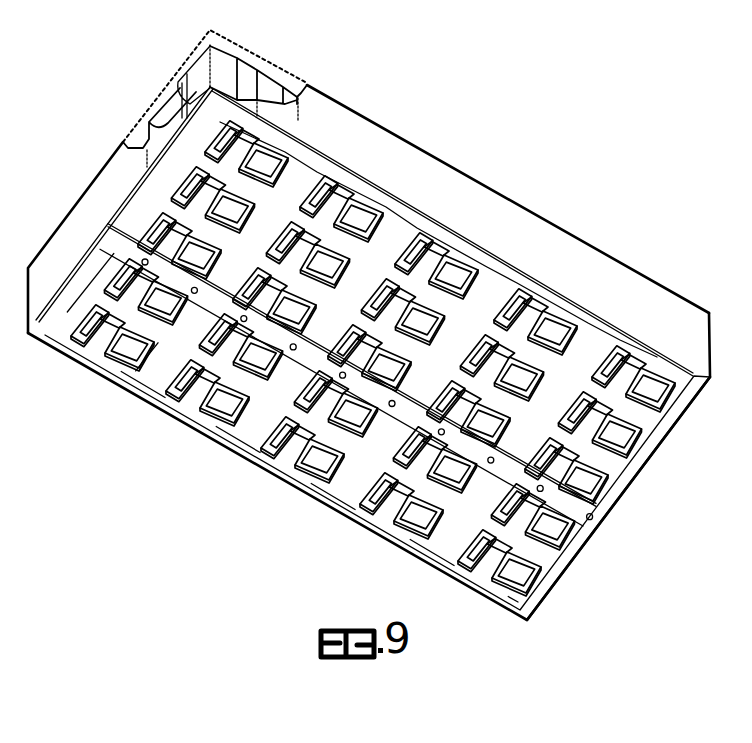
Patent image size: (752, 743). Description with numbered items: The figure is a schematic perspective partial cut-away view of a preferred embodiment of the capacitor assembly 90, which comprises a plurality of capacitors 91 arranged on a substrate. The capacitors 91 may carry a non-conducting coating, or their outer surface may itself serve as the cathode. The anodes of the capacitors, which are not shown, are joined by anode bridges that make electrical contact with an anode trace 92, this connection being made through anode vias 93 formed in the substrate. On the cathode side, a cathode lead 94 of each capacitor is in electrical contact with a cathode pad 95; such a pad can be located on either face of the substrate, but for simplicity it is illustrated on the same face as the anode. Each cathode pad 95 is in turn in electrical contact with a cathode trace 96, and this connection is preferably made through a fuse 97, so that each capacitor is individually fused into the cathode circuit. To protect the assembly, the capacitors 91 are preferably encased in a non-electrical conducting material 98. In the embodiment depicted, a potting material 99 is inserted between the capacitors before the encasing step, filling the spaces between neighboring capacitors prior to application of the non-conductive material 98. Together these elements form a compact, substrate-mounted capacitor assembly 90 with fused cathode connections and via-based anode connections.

The capacitor assembly 90 is at (601, 627).
The capacitors 91 is at (167, 122).
The anode trace 92 is at (617, 493).
The anode vias 93 is at (110, 250).
The cathode lead 94 is at (60, 350).
The cathode pad 95 is at (82, 347).
The cathode trace 96 is at (70, 248).
The fuse 97 is at (250, 142).
The non-electrical conducting material 98 is at (394, 134).
The potting material 99 is at (178, 98).